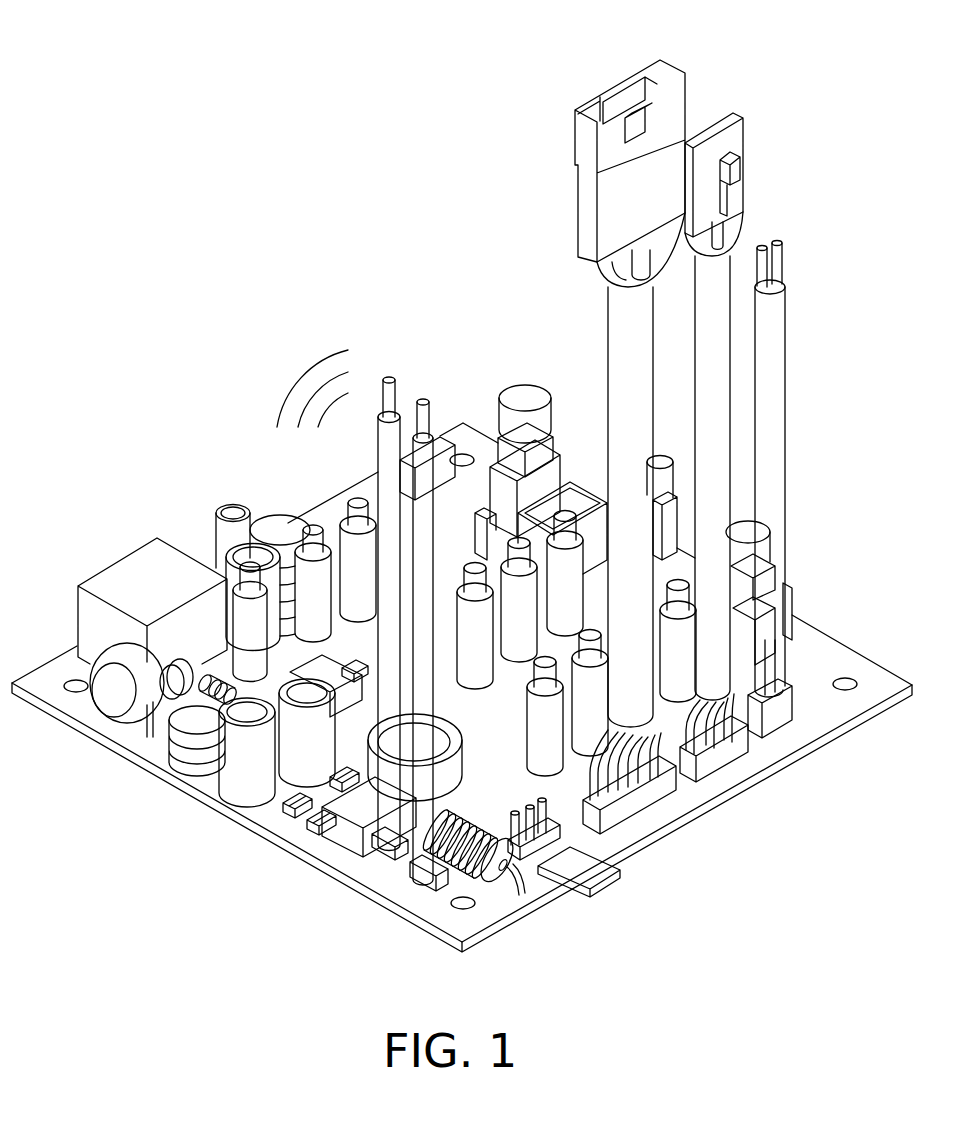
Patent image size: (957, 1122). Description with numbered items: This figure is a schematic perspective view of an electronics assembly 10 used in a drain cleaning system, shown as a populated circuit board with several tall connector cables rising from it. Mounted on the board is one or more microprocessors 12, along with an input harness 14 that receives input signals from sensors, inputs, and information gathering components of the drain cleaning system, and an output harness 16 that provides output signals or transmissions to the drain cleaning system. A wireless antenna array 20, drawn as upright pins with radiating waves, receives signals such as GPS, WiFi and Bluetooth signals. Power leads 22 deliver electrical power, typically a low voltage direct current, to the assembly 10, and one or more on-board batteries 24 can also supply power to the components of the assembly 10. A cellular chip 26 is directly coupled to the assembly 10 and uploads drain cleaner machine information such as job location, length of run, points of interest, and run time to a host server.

The electronics assembly 10 is at (161, 123).
The microprocessor 12 is at (345, 830).
The input harness 14 is at (633, 692).
The output harness 16 is at (717, 673).
The wireless antenna array 20 is at (442, 352).
The power leads 22 is at (783, 371).
The on-board battery 24 is at (442, 745).
The cellular chip 26 is at (147, 573).